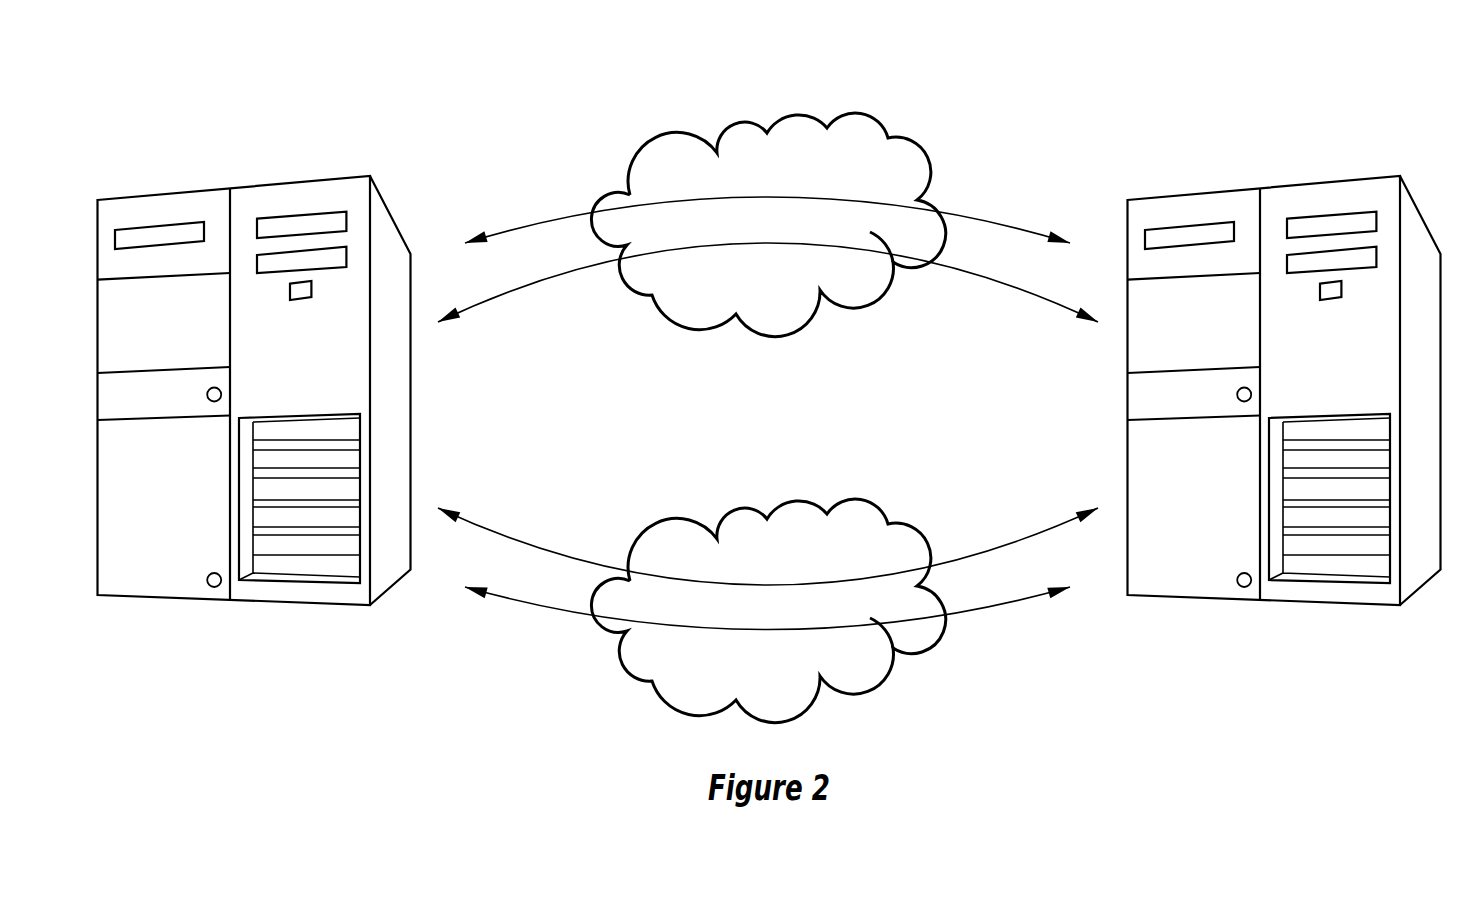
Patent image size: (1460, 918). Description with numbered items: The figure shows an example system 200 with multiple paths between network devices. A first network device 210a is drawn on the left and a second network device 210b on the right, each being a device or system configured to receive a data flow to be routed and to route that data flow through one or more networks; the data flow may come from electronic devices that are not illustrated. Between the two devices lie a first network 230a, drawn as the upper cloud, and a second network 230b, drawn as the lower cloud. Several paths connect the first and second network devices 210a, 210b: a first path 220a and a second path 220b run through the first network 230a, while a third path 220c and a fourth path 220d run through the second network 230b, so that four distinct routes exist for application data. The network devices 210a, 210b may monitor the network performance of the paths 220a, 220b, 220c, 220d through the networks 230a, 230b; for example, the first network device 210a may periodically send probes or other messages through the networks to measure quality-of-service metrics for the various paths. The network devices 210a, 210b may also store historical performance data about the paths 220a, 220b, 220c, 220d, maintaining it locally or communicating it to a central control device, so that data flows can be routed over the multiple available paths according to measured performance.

The system 200 is at (1377, 72).
The first network device 210a is at (167, 190).
The second network device 210b is at (1378, 178).
The first path 220a is at (700, 198).
The second path 220b is at (700, 247).
The third path 220c is at (700, 584).
The fourth path 220d is at (700, 630).
The first network 230a is at (790, 180).
The second network 230b is at (790, 677).